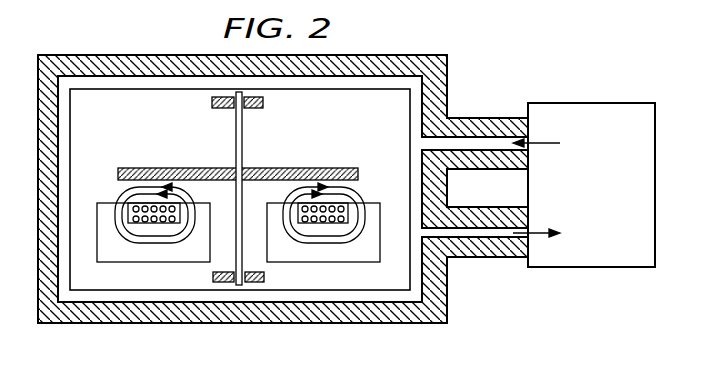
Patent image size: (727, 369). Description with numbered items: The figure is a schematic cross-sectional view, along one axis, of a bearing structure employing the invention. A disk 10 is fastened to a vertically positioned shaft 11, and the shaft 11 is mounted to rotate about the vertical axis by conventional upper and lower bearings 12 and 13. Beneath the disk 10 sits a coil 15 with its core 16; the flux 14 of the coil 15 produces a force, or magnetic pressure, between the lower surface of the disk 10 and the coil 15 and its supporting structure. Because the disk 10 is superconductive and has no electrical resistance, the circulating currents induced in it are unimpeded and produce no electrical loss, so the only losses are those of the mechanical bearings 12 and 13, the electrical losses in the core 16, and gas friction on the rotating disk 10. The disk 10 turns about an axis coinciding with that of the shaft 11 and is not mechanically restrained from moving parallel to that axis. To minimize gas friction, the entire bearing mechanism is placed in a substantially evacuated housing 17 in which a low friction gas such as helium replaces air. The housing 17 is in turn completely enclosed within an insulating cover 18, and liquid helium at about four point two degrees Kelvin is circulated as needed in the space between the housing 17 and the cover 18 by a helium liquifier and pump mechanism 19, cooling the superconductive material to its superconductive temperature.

The disk 10 is at (315, 168).
The shaft 11 is at (243, 159).
The upper bearing 12 is at (213, 103).
The lower bearing 13 is at (234, 277).
The flux 14 is at (363, 198).
The coil 15 is at (333, 219).
The core 16 is at (333, 252).
The housing 17 is at (411, 292).
The insulating cover 18 is at (312, 322).
The helium liquifier and pump mechanism 19 is at (624, 261).